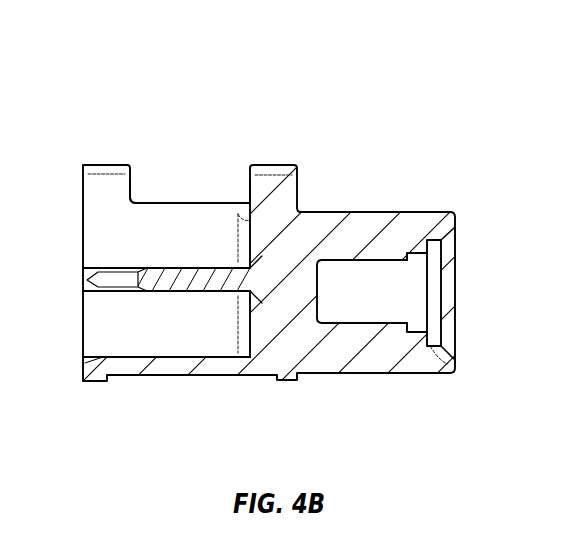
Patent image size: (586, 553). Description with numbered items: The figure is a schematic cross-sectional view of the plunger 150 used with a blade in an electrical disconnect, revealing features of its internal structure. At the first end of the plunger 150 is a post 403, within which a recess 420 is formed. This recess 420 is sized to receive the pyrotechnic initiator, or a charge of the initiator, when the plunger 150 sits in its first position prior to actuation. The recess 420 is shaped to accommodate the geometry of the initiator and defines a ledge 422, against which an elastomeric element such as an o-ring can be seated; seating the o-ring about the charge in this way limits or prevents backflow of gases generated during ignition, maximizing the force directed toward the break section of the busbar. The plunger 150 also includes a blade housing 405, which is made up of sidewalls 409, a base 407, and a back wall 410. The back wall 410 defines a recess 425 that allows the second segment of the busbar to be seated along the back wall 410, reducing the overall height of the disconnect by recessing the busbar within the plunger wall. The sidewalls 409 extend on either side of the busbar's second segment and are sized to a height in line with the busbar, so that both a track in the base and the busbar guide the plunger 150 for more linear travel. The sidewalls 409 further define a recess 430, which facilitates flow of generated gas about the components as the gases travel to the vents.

The plunger 150 is at (152, 90).
The post 403 is at (407, 212).
The blade housing 405 is at (83, 315).
The base 407 is at (175, 377).
The sidewalls 409 is at (83, 165).
The back wall 410 is at (247, 202).
The recess 420 is at (340, 325).
The ledge 422 is at (453, 360).
The recess 425 is at (298, 192).
The recess 430 is at (162, 201).